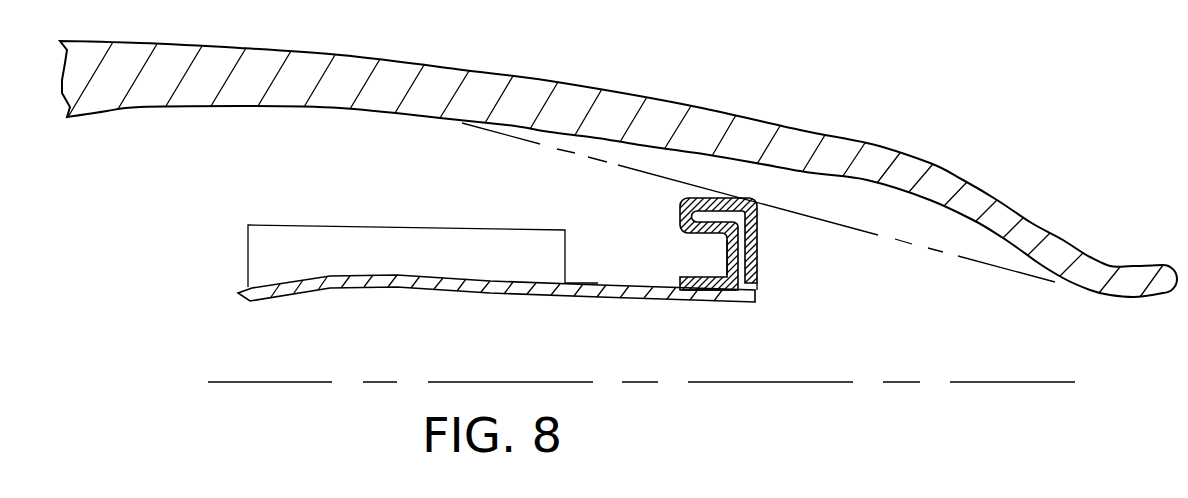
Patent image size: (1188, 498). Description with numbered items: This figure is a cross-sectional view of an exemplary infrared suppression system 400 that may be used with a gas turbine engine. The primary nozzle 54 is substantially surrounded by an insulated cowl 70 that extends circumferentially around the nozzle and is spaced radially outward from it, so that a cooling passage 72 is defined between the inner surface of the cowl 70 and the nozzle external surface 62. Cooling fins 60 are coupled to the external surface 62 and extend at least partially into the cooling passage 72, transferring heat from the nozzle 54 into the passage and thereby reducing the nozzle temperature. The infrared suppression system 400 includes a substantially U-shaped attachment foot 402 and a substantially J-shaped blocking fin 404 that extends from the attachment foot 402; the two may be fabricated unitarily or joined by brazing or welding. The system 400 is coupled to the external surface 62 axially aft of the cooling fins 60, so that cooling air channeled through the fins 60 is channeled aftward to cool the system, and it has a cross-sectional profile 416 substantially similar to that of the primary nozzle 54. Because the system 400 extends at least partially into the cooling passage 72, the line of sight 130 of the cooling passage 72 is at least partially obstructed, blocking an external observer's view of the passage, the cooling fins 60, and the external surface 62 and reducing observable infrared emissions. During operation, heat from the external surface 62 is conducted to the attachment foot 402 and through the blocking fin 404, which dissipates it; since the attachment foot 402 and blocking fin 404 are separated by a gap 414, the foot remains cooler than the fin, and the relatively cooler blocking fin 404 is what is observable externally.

The insulated cowl 70 is at (563, 84).
The cooling passage 72 is at (443, 203).
The cooling fins 60 is at (395, 266).
The external surface 62 is at (598, 283).
The primary nozzle 54 is at (517, 298).
The attachment foot 402 is at (729, 256).
The blocking fin 404 is at (758, 248).
The gap 414 is at (743, 272).
The cross-sectional profile 416 is at (876, 322).
The infrared suppression system 400 is at (786, 279).
The line of sight 130 is at (978, 262).